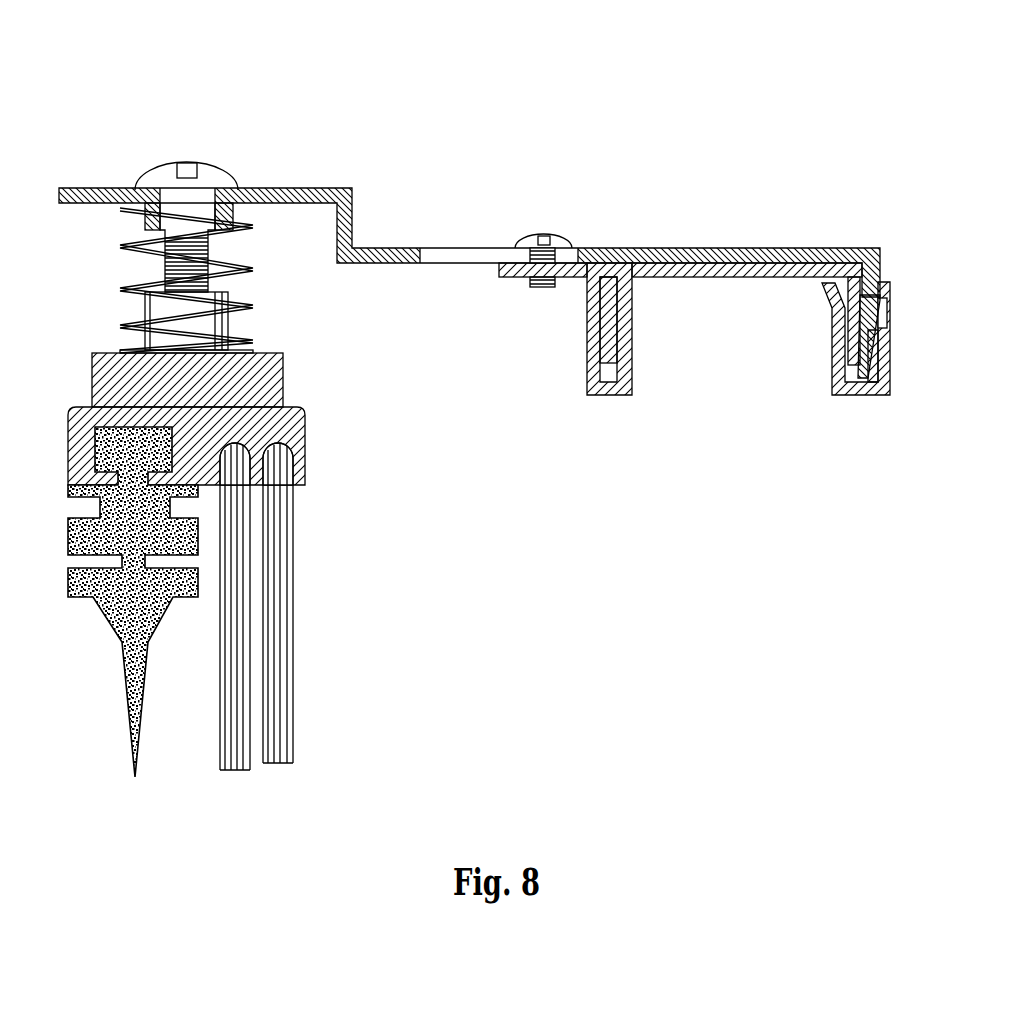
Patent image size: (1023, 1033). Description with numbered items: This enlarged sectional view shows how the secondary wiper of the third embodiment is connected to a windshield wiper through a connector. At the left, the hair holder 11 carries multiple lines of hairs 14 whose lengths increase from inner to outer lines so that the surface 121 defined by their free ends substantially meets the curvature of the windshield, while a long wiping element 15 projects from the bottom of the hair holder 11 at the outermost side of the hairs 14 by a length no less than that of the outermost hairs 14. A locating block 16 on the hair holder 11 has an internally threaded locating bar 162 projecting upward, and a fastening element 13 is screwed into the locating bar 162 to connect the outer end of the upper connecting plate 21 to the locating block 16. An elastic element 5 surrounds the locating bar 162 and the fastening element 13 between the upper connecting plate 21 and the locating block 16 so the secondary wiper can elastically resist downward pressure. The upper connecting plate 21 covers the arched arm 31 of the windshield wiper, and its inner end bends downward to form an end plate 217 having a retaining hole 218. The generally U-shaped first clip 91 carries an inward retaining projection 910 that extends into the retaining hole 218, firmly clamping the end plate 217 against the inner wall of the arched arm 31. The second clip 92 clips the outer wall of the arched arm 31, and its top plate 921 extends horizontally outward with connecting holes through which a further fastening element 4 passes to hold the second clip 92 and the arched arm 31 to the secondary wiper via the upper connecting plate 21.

The screw 4 is at (556, 235).
The elastic element 5 is at (242, 265).
The hair holder 11 is at (297, 420).
The fastening element 13 is at (207, 170).
The hairs 14 is at (278, 607).
The wiping element 15 is at (107, 615).
The locating block 16 is at (270, 367).
The upper connecting plate 21 is at (352, 212).
The arched arm 31 is at (750, 268).
The first clip 91 is at (833, 383).
The second clip 92 is at (590, 360).
The surface 121 is at (281, 770).
The locating bar 162 is at (223, 320).
The end plate 217 is at (872, 357).
The retaining hole 218 is at (880, 290).
The retaining projection 910 is at (887, 307).
The top plate 921 is at (507, 278).